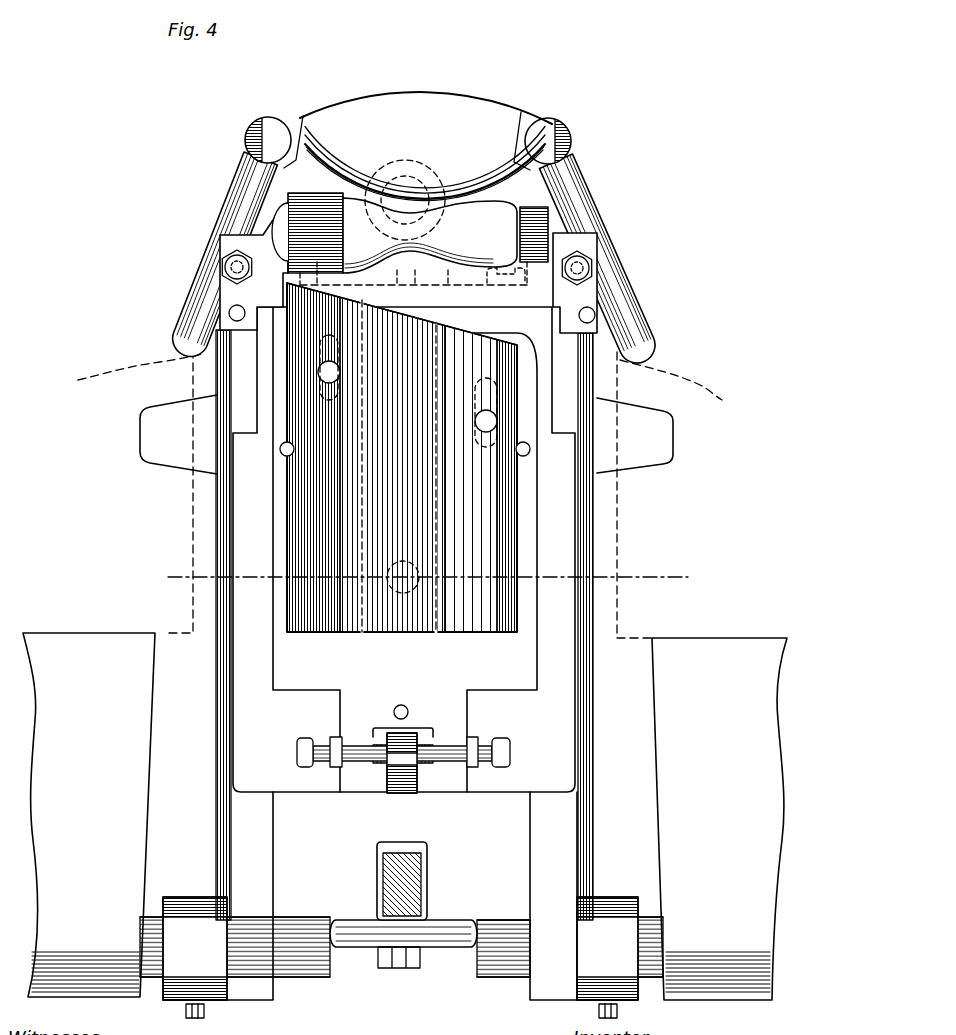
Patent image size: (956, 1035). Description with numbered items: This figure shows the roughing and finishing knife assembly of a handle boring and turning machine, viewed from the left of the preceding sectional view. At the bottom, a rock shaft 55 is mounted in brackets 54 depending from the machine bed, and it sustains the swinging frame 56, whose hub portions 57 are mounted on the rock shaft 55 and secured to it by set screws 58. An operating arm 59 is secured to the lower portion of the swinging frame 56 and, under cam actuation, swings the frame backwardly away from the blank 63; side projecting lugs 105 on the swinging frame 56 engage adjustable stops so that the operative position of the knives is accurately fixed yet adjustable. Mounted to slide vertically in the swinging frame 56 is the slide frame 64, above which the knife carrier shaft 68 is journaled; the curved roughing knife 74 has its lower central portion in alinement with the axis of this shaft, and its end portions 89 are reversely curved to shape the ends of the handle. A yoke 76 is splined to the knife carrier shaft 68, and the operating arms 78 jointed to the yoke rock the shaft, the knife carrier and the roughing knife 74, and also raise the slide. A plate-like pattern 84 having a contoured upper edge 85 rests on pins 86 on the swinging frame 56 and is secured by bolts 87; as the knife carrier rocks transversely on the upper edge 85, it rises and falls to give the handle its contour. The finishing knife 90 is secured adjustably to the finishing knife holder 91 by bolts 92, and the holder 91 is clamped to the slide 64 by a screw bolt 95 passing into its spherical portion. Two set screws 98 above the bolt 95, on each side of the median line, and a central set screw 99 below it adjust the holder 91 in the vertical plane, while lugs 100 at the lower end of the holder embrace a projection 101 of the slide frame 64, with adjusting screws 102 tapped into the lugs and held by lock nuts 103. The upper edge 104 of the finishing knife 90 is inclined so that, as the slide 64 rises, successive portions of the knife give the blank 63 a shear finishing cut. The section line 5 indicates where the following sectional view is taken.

The section line 5— 5 is at (422, 577).
The brackets 54 is at (139, 770).
The rock shaft 55 is at (514, 972).
The swinging frame 56 is at (222, 349).
The hub portions 57 is at (186, 897).
The set screws 58 is at (207, 1011).
The operating arm 59 is at (421, 891).
The blank 63 is at (477, 222).
The slide frame 64 is at (561, 627).
The knife carrier shaft 68 is at (397, 140).
The curved roughing knife 74 is at (448, 205).
The yoke 76 is at (297, 178).
The operating arms 78 is at (226, 213).
The pattern 84 is at (560, 240).
The upper edge 85 is at (381, 205).
The pins 86 is at (232, 310).
The bolts 87 is at (222, 265).
The end portions 89 is at (304, 118).
The finishing knife 90 is at (468, 347).
The finishing knife holder 91 is at (282, 655).
The bolts 92 is at (333, 380).
The screw bolt 95 is at (404, 596).
The set screws 98 is at (285, 450).
The central set screw 99 is at (406, 709).
The lugs 100 is at (350, 730).
The projection 101 is at (420, 770).
The adjusting screws 102 is at (322, 762).
The lock nuts 103 is at (338, 764).
The upper edge 104 is at (450, 317).
The side projecting lugs 105 is at (152, 437).